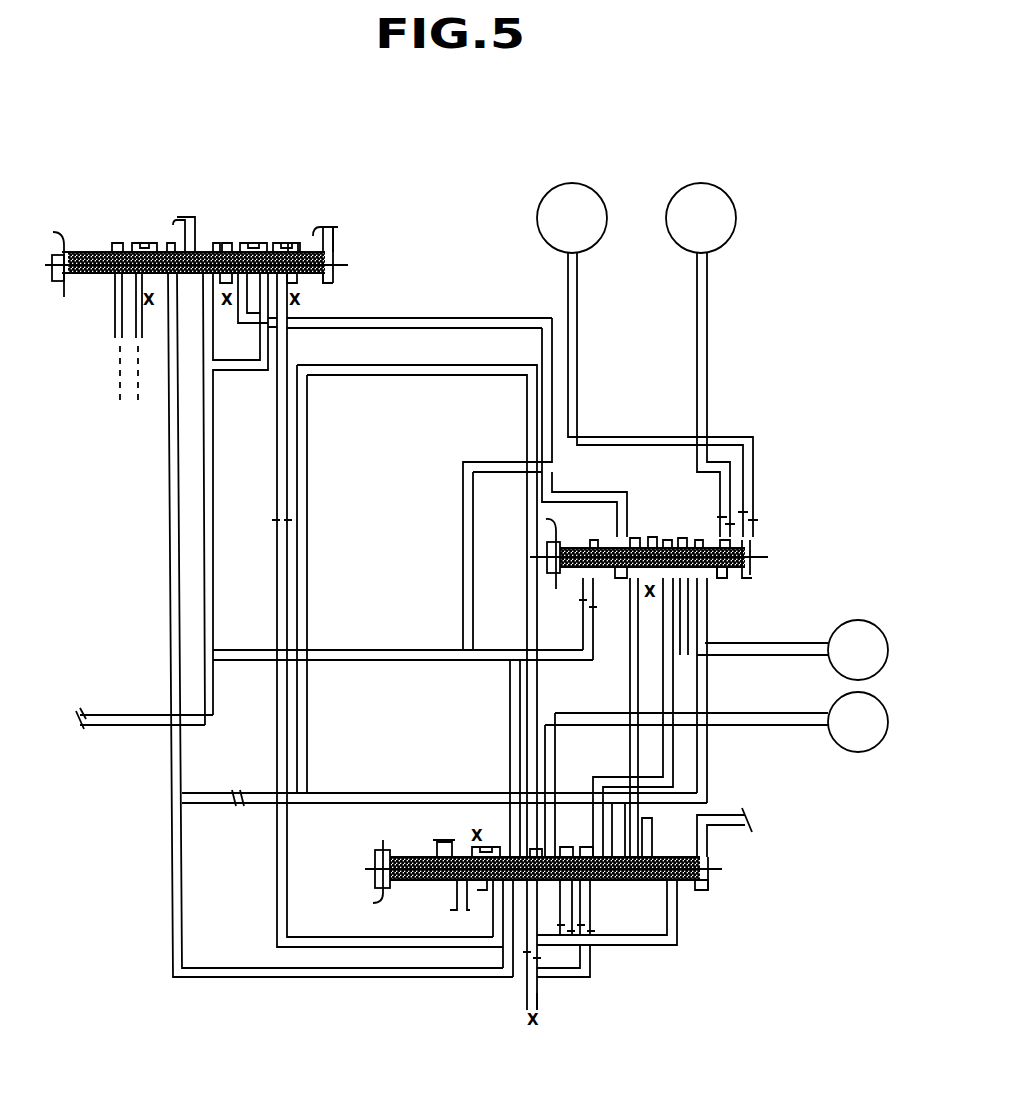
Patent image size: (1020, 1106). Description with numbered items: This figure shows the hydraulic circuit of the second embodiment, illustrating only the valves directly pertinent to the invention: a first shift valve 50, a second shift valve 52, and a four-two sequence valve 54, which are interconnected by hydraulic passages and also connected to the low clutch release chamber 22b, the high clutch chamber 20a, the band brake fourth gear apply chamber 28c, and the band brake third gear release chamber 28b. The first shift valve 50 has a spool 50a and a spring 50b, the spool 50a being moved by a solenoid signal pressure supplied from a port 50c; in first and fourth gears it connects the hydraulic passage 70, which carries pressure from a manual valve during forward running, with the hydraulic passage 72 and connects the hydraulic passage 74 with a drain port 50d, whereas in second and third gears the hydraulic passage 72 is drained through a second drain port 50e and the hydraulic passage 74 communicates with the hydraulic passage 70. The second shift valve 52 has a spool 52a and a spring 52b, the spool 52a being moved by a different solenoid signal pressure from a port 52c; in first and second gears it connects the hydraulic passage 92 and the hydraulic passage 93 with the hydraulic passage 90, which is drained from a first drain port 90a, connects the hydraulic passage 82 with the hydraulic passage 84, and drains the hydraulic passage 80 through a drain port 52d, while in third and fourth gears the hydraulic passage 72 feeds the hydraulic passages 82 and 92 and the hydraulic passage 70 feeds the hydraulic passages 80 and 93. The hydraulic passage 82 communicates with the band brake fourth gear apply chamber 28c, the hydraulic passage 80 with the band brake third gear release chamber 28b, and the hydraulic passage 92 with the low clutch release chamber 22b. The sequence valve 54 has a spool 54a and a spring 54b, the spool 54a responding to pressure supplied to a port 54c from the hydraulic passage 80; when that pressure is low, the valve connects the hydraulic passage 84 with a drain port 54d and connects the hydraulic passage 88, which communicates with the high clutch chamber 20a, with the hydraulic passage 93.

The first shift valve 50 is at (345, 256).
The spool 50a is at (326, 282).
The spring 50b is at (72, 282).
The port 50c is at (338, 232).
The drain port 50d is at (227, 243).
The second drain port 50e is at (293, 243).
The second shift valve 52 is at (372, 857).
The spool 52a is at (703, 884).
The spring 52b is at (400, 882).
The port 52c is at (708, 862).
The drain port 52d is at (478, 892).
The 4-2 sequence valve 54 is at (540, 575).
The spool 54a is at (738, 578).
The spring 54b is at (565, 582).
The port 54c is at (752, 546).
The drain port 54d is at (652, 540).
The hydraulic passage 70 is at (266, 342).
The hydraulic passage 72 is at (290, 364).
The hydraulic passage 74 is at (397, 318).
The hydraulic passage 80 is at (580, 352).
The hydraulic passage 82 is at (712, 354).
The hydraulic passage 84 is at (628, 660).
The hydraulic passage 88 is at (792, 643).
The hydraulic passage 90 is at (573, 927).
The first drain port 90a is at (541, 994).
The hydraulic passage 92 is at (575, 707).
The hydraulic passage 93 is at (672, 697).
The band brake third gear release chamber 28b is at (606, 174).
The band brake fourth gear apply chamber 28c is at (740, 174).
The high clutch chamber 20a is at (853, 620).
The low clutch release chamber 22b is at (830, 730).